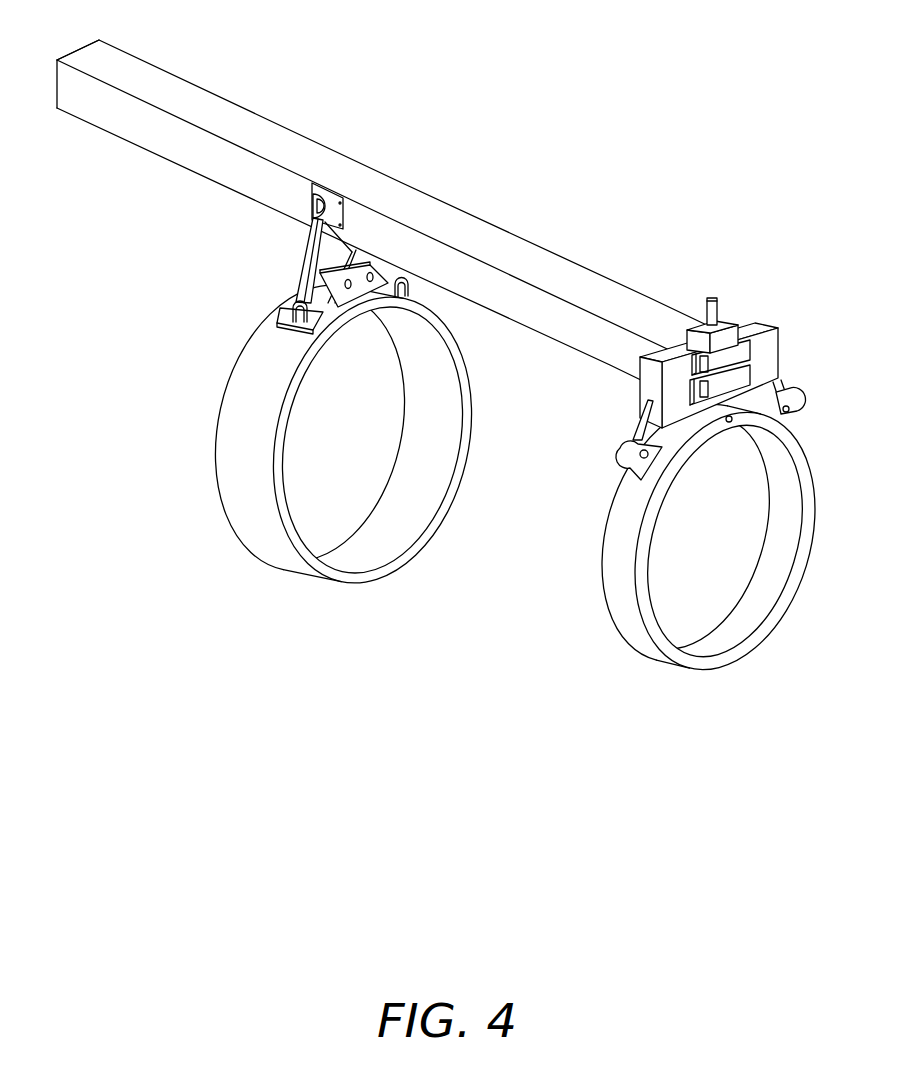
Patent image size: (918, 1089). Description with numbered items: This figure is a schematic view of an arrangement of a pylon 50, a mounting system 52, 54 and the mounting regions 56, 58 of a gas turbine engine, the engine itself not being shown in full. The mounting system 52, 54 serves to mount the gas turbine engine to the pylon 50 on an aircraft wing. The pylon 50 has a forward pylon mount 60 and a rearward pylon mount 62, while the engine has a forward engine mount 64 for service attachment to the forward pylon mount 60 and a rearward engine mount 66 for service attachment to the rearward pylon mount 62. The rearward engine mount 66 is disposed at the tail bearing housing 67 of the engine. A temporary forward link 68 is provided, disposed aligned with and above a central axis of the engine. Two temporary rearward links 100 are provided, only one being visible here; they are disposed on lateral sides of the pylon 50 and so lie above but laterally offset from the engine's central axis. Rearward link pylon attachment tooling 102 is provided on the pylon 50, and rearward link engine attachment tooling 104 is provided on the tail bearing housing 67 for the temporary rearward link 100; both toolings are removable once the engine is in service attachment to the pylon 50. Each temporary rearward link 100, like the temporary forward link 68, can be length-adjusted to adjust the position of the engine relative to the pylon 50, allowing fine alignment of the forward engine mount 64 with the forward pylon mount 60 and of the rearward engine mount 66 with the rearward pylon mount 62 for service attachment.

The pylon 50 is at (192, 84).
The mounting system 52 is at (273, 210).
The mounting system 54 is at (795, 348).
The mounting region 56 is at (300, 595).
The mounting region 58 is at (651, 702).
The forward pylon mount 60 is at (640, 400).
The rearward pylon mount 62 is at (340, 245).
The forward engine mount 64 is at (625, 457).
The rearward engine mount 66 is at (398, 268).
The tail bearing housing 67 is at (472, 405).
The temporary forward link 68 is at (688, 269).
The temporary rearward link 100 is at (276, 318).
The rearward link pylon attachment tooling 102 is at (310, 197).
The rearward link engine attachment tooling 104 is at (270, 322).